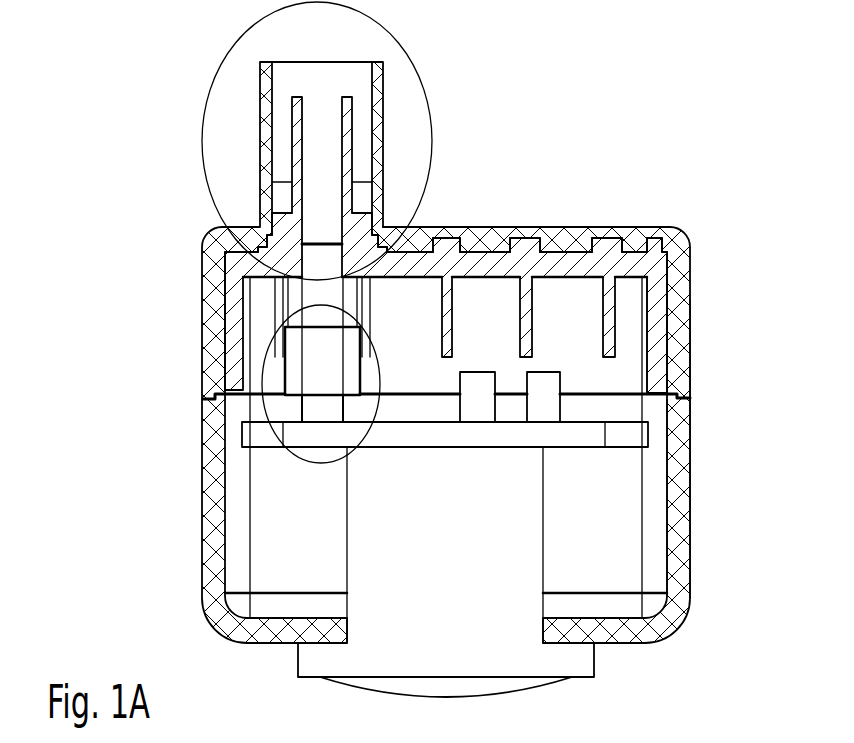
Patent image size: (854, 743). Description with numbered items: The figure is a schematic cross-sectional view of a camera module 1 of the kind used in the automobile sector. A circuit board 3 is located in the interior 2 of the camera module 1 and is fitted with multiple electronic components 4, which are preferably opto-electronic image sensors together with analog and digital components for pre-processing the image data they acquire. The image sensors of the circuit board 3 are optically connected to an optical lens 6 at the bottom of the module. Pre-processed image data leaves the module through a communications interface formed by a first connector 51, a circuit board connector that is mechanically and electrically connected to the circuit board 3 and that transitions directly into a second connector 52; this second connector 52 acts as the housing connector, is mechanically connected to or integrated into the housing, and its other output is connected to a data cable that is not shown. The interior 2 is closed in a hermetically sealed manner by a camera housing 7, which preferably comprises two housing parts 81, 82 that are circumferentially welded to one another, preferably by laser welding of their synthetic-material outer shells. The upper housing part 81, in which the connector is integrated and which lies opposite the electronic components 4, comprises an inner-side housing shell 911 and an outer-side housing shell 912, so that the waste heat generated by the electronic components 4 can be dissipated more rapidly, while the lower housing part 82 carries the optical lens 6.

The camera module 1 is at (574, 104).
The interior 2 is at (495, 338).
The circuit board 3 is at (580, 437).
The electronic components 4 is at (540, 385).
The first connector 51 is at (266, 353).
The second connector 52 is at (203, 142).
The optical lens 6 is at (578, 660).
The camera housing 7 is at (212, 433).
The housing part 81 is at (645, 233).
The housing part 82 is at (675, 543).
The inner-side housing shell 911 is at (658, 308).
The outer-side housing shell 912 is at (535, 205).